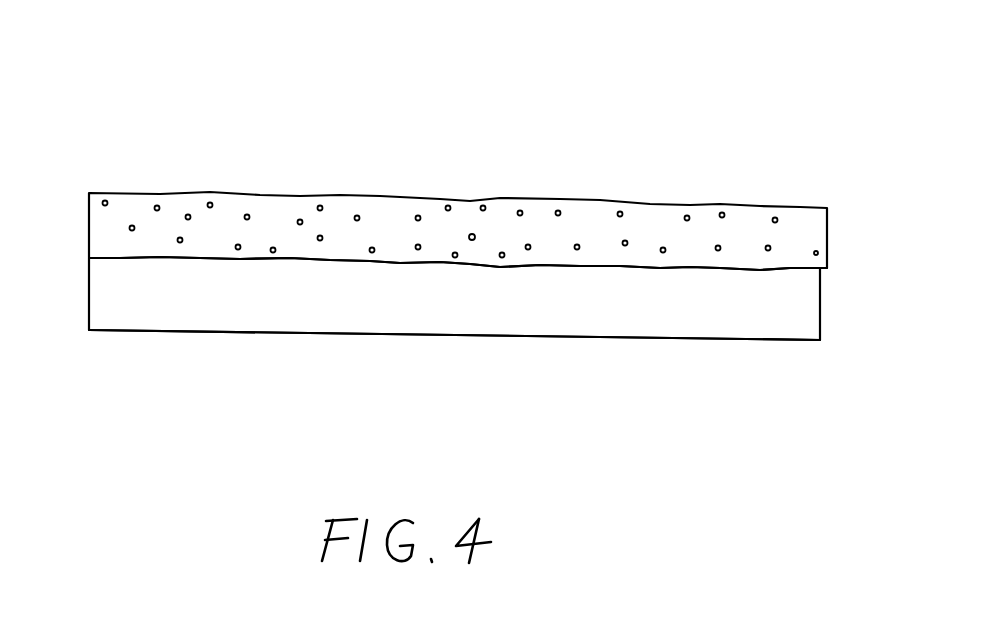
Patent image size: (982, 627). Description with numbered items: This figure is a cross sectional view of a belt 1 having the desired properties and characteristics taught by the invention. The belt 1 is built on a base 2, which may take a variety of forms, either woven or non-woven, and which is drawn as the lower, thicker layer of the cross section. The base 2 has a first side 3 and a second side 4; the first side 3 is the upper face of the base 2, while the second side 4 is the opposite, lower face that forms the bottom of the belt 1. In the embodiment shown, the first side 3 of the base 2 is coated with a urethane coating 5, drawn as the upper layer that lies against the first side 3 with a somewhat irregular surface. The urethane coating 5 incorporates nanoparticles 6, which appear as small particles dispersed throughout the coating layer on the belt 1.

The belt 1 is at (66, 20).
The base 2 is at (828, 303).
The first side 3 is at (123, 252).
The second side 4 is at (132, 331).
The urethane coating 5 is at (829, 243).
The nanoparticles 6 is at (480, 230).